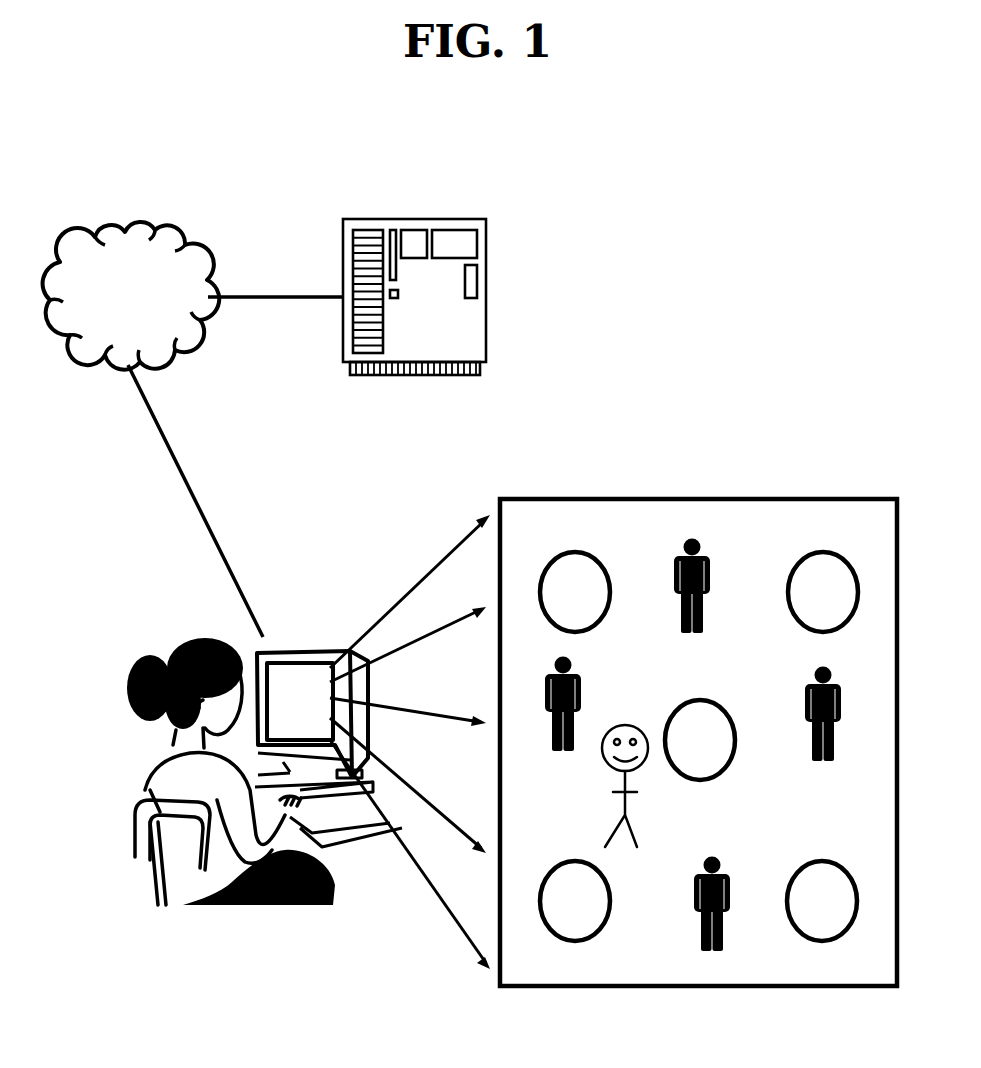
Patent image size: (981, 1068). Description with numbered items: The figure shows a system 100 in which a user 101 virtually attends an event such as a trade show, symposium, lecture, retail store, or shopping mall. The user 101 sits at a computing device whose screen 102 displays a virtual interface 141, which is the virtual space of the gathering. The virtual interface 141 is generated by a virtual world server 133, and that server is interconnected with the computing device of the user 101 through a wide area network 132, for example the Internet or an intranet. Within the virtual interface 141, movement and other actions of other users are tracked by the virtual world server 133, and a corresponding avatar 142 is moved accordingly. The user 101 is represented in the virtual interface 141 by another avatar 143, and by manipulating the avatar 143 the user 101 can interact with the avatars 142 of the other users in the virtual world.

The system 100 is at (484, 96).
The user 101 is at (202, 908).
The screen 102 is at (313, 712).
The wide area network 132 is at (140, 324).
The virtual world server 133 is at (487, 307).
The virtual interface 141 is at (745, 499).
The avatar 142 is at (807, 693).
The avatar 143 is at (625, 726).